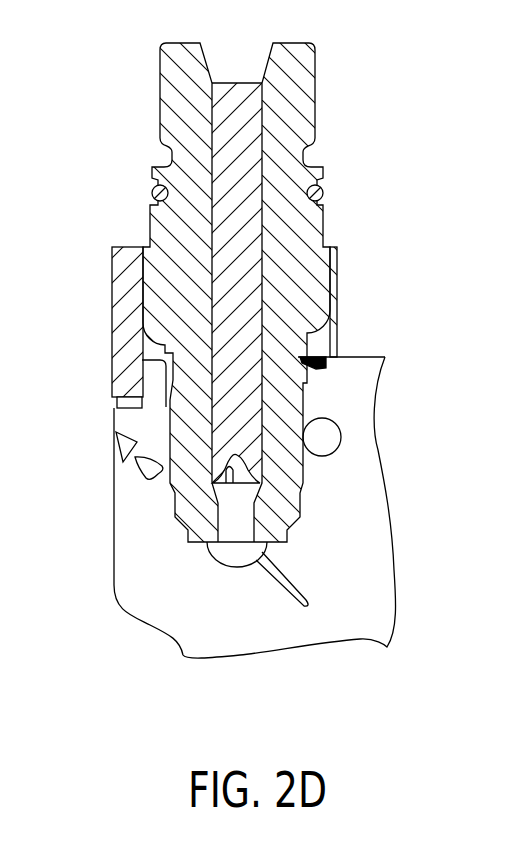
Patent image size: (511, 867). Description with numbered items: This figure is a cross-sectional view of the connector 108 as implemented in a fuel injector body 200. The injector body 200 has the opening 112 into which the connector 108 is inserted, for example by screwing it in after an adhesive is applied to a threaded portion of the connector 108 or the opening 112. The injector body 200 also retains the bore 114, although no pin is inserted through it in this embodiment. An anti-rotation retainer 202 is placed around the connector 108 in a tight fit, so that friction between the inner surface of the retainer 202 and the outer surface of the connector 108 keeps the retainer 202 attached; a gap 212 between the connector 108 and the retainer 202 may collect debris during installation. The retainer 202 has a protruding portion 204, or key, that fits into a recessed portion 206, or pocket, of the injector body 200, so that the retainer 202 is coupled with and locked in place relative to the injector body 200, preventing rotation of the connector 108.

The connector 108 is at (297, 80).
The anti-rotation retainer 202 is at (338, 285).
The opening 112 is at (343, 352).
The bore 114 is at (317, 430).
The protruding portion 204 is at (104, 302).
The gap 212 is at (133, 342).
The recessed portion 206 is at (118, 418).
The fuel injector body 200 is at (137, 562).